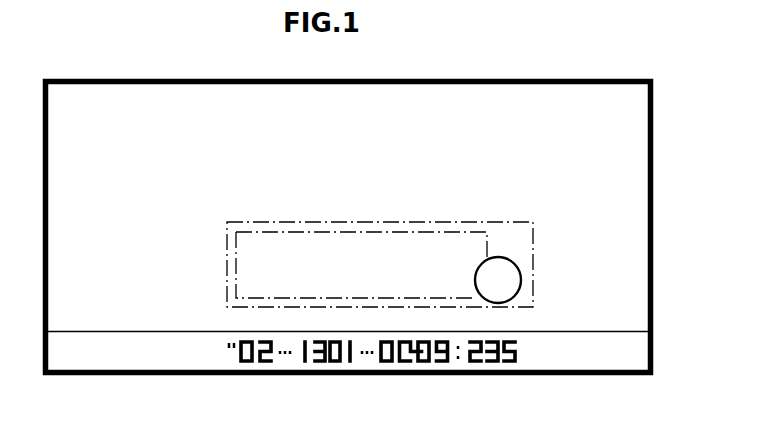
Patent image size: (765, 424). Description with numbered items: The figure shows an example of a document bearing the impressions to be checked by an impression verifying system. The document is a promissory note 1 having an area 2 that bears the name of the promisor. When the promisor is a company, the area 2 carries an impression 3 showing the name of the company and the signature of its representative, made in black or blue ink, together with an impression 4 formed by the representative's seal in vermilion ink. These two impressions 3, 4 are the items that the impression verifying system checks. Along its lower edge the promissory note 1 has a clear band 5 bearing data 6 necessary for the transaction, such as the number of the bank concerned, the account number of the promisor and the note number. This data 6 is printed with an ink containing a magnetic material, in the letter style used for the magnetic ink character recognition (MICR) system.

The promissory note 1 is at (577, 78).
The area 2 is at (463, 222).
The impression 3 is at (482, 230).
The impression 4 is at (522, 277).
The clear band 5 is at (633, 349).
The data 6 is at (513, 363).